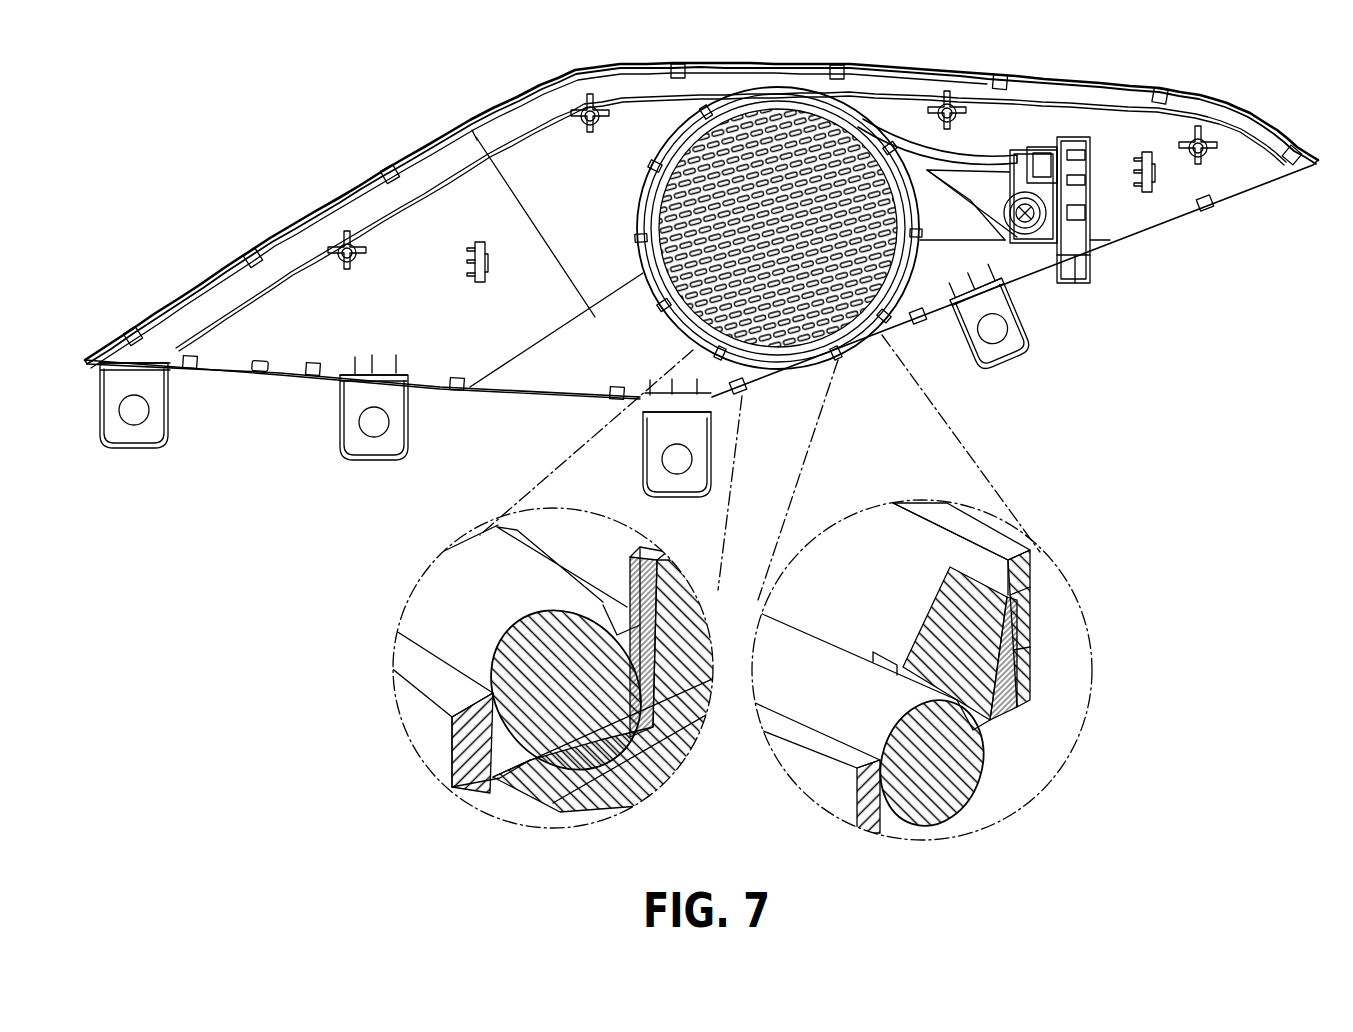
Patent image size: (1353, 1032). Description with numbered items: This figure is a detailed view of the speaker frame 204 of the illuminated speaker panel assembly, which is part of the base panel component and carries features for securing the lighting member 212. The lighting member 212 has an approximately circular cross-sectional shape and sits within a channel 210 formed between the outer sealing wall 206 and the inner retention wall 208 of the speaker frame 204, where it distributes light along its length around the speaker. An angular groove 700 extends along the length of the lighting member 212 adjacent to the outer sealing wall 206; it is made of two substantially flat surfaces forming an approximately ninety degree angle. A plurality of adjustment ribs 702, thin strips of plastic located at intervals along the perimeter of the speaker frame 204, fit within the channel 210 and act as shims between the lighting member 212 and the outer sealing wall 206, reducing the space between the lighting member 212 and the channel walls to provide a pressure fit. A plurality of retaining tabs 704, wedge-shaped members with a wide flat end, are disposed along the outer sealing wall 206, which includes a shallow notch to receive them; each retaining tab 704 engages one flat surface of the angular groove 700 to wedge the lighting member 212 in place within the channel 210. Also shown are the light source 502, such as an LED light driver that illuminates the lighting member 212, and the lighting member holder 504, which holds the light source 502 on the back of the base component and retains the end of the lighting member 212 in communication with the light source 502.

The speaker frame 204 is at (850, 130).
The lighting member 212 is at (750, 102).
The plurality of adjustment ribs 702 is at (702, 108).
The plurality of retaining tabs 704 is at (870, 327).
The angular groove 700 is at (607, 603).
The outer sealing wall 206 is at (690, 720).
The inner retention wall 208 is at (473, 783).
The channel 210 is at (508, 777).
The lighting member holder 504 is at (982, 187).
The light source 502 is at (1073, 262).